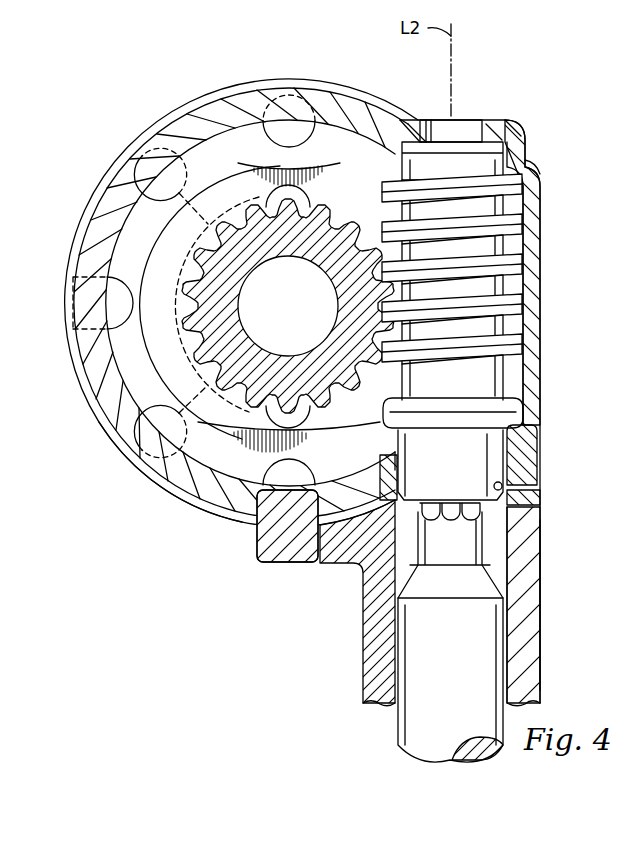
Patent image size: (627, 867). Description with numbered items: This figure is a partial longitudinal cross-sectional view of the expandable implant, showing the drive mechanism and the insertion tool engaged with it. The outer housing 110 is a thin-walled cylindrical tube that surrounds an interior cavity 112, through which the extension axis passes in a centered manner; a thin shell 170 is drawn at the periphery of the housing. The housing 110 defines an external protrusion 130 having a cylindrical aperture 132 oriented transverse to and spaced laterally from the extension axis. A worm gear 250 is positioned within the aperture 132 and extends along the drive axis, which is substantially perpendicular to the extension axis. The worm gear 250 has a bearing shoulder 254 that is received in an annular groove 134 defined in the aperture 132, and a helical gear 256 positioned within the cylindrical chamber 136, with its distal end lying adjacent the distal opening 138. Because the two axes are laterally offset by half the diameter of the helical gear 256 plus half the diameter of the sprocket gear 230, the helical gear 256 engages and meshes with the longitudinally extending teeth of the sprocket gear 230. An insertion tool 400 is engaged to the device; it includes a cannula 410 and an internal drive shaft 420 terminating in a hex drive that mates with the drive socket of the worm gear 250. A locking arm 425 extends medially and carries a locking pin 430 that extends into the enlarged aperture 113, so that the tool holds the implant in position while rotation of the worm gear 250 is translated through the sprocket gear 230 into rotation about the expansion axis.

The outer housing 110 is at (312, 82).
The interior cavity 112 is at (305, 318).
The enlarged aperture 113 is at (228, 512).
The external protrusion 130 is at (541, 192).
The cylindrical aperture 132 is at (540, 502).
The annular groove 134 is at (535, 462).
The cylindrical chamber 136 is at (518, 166).
The distal opening 138 is at (462, 122).
The outer housing shell 170 is at (224, 108).
The sprocket gear 230 is at (300, 443).
The worm gear 250 is at (466, 471).
The bearing shoulder 254 is at (526, 376).
The helical gear 256 is at (526, 232).
The insertion tool 400 is at (546, 601).
The cannula 410 is at (362, 662).
The internal drive shaft 420 is at (466, 683).
The locking arm 425 is at (330, 570).
The locking pin 430 is at (256, 552).